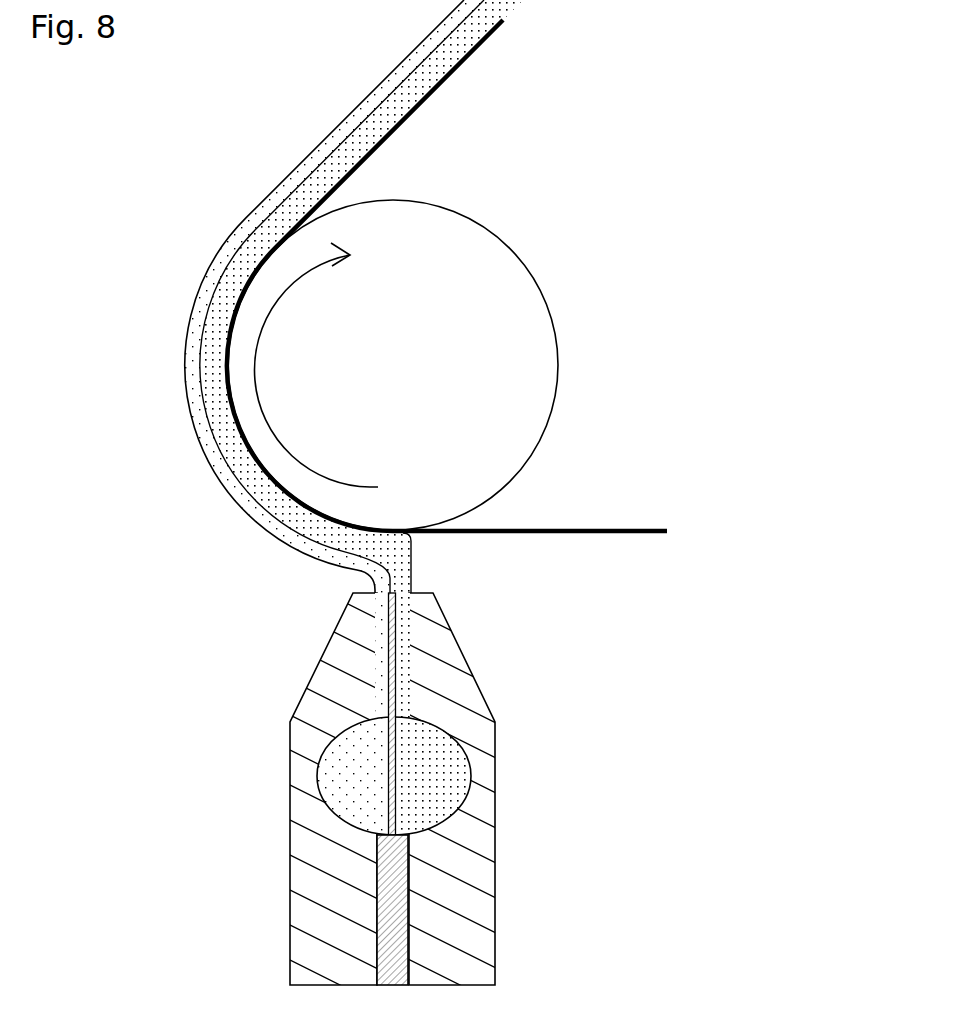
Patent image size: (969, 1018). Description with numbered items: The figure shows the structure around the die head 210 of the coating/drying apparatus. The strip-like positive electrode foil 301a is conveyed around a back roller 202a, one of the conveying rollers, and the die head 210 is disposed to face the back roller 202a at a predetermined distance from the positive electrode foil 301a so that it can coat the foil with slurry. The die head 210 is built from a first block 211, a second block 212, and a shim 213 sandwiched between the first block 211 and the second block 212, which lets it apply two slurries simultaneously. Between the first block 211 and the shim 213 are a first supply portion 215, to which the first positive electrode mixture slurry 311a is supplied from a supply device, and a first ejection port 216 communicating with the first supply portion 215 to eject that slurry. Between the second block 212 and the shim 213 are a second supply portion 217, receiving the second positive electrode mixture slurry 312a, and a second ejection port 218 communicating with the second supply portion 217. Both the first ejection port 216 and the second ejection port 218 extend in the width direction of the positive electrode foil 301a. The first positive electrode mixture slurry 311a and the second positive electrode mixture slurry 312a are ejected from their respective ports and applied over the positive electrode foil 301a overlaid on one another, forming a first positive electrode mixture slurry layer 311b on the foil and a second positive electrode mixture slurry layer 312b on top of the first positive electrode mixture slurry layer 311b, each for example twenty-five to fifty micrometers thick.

The back roller 202a is at (510, 288).
The positive electrode foil 301a is at (553, 531).
The first positive electrode mixture slurry layer 311b is at (418, 90).
The second positive electrode mixture slurry layer 312b is at (373, 108).
The die head 210 is at (450, 786).
The first block 211 is at (453, 890).
The second block 212 is at (328, 892).
The shim 213 is at (393, 753).
The first supply portion 215 is at (445, 806).
The first ejection port 216 is at (405, 593).
The second supply portion 217 is at (332, 805).
The second ejection port 218 is at (383, 593).
The first positive electrode mixture slurry 311a is at (445, 732).
The second positive electrode mixture slurry 312a is at (343, 737).